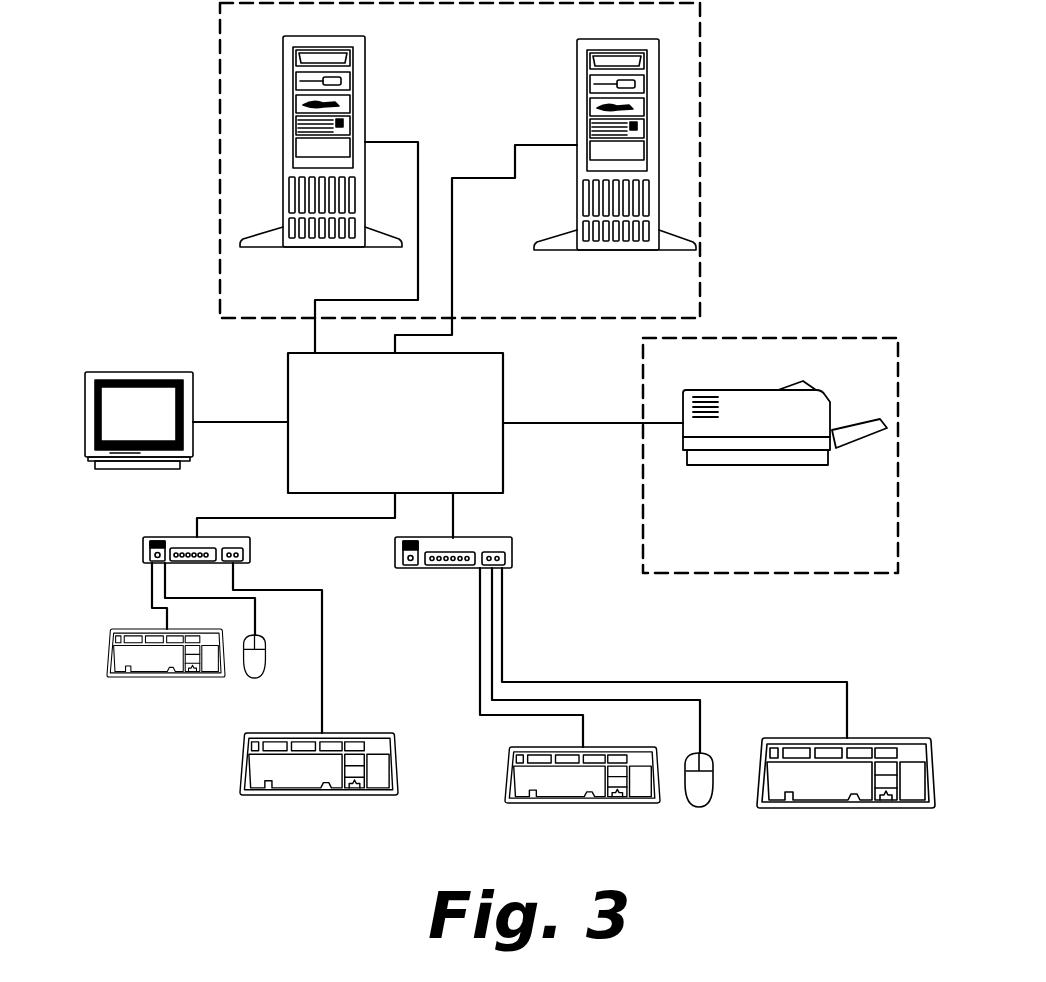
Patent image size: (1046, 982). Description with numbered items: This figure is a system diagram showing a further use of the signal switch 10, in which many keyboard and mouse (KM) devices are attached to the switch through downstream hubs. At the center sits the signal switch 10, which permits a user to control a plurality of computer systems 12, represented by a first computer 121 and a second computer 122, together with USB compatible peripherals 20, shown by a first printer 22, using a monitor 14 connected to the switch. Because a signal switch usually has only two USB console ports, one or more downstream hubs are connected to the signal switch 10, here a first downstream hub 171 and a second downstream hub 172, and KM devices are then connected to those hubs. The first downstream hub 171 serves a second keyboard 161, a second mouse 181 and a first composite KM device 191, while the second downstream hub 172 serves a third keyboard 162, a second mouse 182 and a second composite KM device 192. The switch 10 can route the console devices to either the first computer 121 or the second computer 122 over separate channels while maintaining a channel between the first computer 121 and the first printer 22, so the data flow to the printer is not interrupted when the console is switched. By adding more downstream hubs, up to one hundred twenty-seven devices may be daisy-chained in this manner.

The signal switch 10 is at (410, 435).
The plurality of computer systems 12 is at (476, 85).
The first computer 121 is at (344, 278).
The second computer 122 is at (638, 281).
The monitor 14 is at (152, 498).
The USB compatible peripherals 20 is at (813, 553).
The first printer 22 is at (769, 496).
The first downstream hub 171 is at (216, 591).
The second downstream hub 172 is at (474, 596).
The second keyboard 161 is at (183, 708).
The second mouse 181 is at (271, 708).
The first composite KM device 191 is at (338, 829).
The third keyboard 162 is at (603, 839).
The second mouse 182 is at (716, 839).
The second composite KM device 192 is at (864, 840).